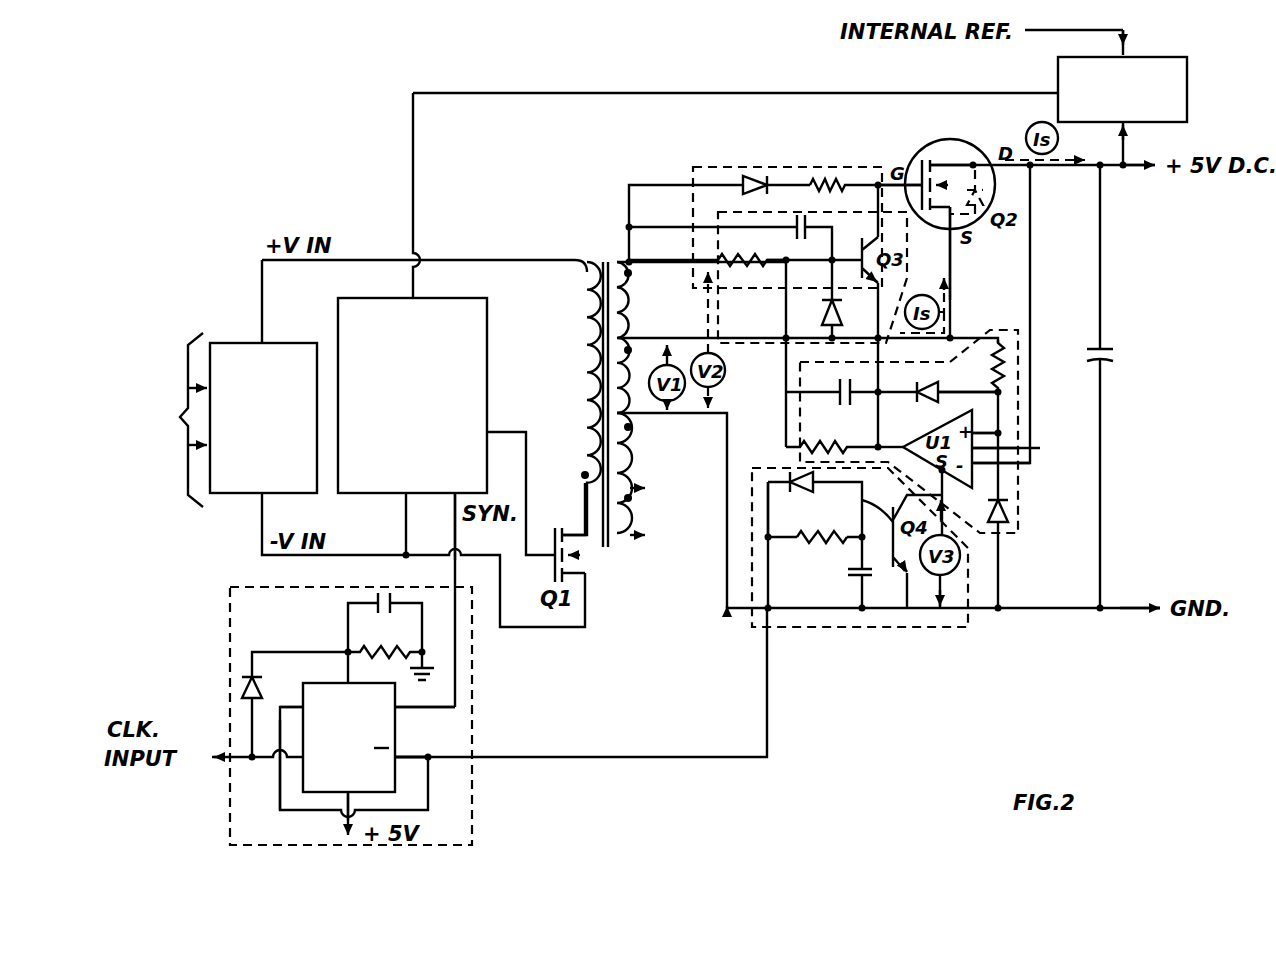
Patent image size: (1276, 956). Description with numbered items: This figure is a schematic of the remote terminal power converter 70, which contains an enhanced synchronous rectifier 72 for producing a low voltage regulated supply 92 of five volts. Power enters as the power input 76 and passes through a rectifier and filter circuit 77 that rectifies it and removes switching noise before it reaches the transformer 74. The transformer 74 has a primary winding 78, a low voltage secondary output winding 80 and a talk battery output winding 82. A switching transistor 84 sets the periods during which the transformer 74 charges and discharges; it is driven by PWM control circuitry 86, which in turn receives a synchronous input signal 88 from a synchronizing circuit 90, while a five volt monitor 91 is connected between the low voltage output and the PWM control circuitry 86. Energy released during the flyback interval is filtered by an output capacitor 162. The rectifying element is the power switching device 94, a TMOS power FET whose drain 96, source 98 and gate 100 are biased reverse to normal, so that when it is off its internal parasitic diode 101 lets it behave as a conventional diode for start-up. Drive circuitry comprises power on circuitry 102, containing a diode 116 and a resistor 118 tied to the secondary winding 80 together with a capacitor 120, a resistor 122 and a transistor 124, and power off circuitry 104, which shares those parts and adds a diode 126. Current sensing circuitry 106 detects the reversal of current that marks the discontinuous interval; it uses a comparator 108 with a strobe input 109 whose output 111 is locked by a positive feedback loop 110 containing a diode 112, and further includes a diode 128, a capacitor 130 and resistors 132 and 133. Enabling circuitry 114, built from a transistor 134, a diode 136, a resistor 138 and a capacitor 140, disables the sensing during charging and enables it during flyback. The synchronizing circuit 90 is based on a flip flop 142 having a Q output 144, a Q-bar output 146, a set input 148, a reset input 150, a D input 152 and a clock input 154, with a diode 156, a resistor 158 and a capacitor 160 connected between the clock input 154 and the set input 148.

The remote terminal power converter 70 is at (383, 112).
The enhanced synchronous rectifier 72 is at (530, 803).
The transformer 74 is at (604, 262).
The power input 76 is at (128, 448).
The rectifier and filter circuit 77 is at (280, 343).
The primary winding 78 is at (587, 365).
The low voltage secondary output winding 80 is at (642, 322).
The talk battery output winding 82 is at (645, 455).
The switching transistor 84 is at (588, 561).
The PWM control circuitry 86 is at (386, 497).
The synchronous input signal 88 is at (455, 520).
The synchronizing circuit 90 is at (478, 736).
The 5 Volt Monitor 91 is at (1187, 95).
The low voltage regulated supply 92 is at (1192, 172).
The power switching device 94 is at (968, 145).
The drain 96 is at (1010, 168).
The source 98 is at (950, 235).
The gate 100 is at (907, 175).
The internal parasitic diode 101 is at (990, 200).
The power on circuitry 102 is at (731, 166).
The power off circuitry 104 is at (755, 345).
The current sensing circuitry 106 is at (1018, 417).
The comparator 108 is at (1018, 448).
The strobe input 109 is at (1018, 480).
The positive feedback loop 110 is at (968, 378).
The comparator output 111 is at (900, 446).
The diode 112 is at (921, 381).
The enabling circuitry 114 is at (937, 630).
The diode 116 is at (760, 176).
The resistor 118 is at (828, 178).
The capacitor 120 is at (745, 248).
The resistor 122 is at (742, 268).
The transistor 124 is at (860, 250).
The diode 126 is at (820, 318).
The diode 128 is at (1008, 513).
The capacitor 130 is at (832, 406).
The resistor 132 is at (810, 445).
The resistor 133 is at (1001, 352).
The transistor 134 is at (808, 492).
The diode 136 is at (795, 509).
The resistor 138 is at (806, 546).
The capacitor 140 is at (847, 578).
The flip flop 142 is at (283, 806).
The Q output 144 is at (398, 708).
The Q-bar output 146 is at (399, 756).
The set input 148 is at (348, 665).
The reset input 150 is at (343, 809).
The D input 152 is at (300, 703).
The clock input 154 is at (283, 779).
The diode 156 is at (252, 675).
The resistor 158 is at (394, 641).
The capacitor 160 is at (376, 600).
The output capacitor 162 is at (1113, 361).